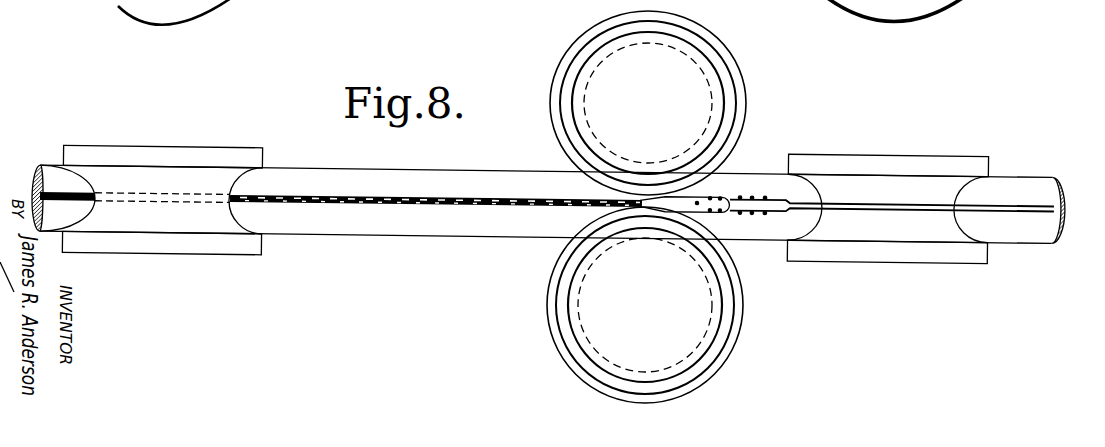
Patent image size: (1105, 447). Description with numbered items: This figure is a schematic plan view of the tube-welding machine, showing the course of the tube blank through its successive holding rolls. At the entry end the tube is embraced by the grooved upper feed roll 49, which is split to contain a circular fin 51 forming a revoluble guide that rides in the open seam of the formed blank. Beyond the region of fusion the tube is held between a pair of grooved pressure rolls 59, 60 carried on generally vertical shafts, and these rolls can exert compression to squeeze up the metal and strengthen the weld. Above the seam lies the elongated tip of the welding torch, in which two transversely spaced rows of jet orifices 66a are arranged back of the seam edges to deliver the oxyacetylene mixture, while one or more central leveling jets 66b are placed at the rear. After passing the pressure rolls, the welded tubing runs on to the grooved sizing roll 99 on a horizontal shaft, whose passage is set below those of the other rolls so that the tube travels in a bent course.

The upper feed roll 49 is at (946, 159).
The circular fin 51 is at (927, 208).
The pressure roll 59 is at (557, 327).
The pressure roll 60 is at (582, 45).
The jet orifices 66a is at (745, 214).
The central leveling jets 66b is at (696, 206).
The sizing roll 99 is at (218, 247).